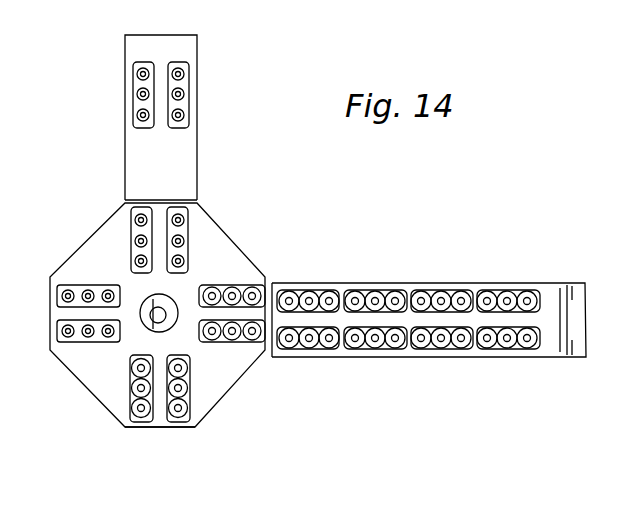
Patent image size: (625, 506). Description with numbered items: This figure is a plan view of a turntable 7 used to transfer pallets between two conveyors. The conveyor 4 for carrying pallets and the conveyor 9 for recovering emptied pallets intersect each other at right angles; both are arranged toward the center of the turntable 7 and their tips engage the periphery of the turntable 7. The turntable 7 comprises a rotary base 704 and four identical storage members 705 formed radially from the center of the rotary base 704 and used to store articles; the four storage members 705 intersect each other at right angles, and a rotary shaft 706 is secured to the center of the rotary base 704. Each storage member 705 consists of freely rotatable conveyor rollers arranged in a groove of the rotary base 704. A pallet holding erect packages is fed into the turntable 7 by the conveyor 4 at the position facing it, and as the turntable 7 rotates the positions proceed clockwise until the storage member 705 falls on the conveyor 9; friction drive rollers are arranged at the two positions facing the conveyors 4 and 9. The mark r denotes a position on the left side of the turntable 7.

The conveyor for carrying pallets 4 is at (552, 346).
The turn table 7 is at (237, 245).
The conveyor for recovering emptied pallets 9 is at (193, 143).
The rotary base 704 is at (128, 283).
The storage members 705 is at (231, 348).
The rotary shaft 706 is at (143, 325).
The left edge r is at (50, 312).